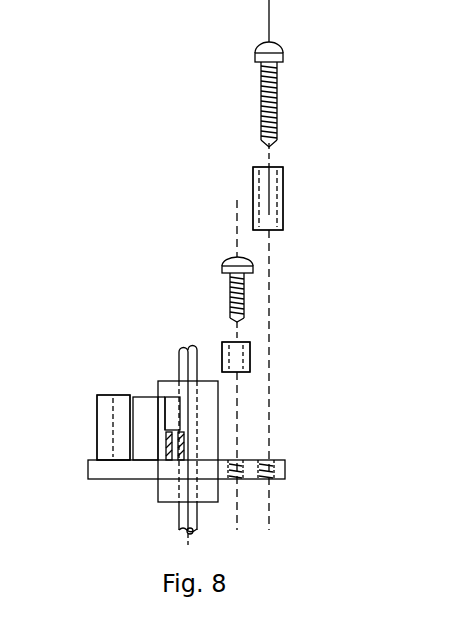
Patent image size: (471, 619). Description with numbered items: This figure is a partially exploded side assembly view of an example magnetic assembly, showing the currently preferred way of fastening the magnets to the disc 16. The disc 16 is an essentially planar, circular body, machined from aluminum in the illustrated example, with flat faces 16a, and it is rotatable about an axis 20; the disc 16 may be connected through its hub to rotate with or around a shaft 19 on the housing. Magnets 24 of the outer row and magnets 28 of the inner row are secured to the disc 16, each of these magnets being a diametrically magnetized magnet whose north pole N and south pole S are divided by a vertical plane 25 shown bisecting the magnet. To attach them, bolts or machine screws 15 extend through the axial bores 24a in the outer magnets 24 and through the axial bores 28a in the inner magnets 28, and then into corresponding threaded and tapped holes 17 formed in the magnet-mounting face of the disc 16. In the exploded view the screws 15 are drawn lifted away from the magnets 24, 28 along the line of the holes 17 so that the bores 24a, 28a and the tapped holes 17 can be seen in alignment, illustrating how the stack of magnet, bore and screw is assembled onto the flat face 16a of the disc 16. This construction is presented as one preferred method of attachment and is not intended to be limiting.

The machine screws 15 is at (258, 165).
The disc 16 is at (159, 489).
The flat faces 16a is at (287, 397).
The threaded and tapped holes 17 is at (291, 429).
The shaft 19 is at (167, 413).
The axis 20 is at (151, 420).
The magnets 24 is at (205, 292).
The axial bores 24a is at (316, 197).
The vertical plane 25 is at (80, 420).
The magnets 28 is at (180, 388).
The axial bores 28a is at (178, 321).